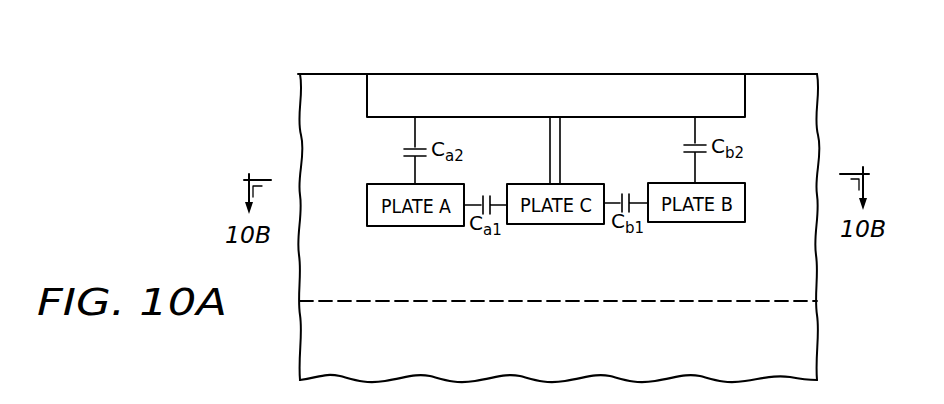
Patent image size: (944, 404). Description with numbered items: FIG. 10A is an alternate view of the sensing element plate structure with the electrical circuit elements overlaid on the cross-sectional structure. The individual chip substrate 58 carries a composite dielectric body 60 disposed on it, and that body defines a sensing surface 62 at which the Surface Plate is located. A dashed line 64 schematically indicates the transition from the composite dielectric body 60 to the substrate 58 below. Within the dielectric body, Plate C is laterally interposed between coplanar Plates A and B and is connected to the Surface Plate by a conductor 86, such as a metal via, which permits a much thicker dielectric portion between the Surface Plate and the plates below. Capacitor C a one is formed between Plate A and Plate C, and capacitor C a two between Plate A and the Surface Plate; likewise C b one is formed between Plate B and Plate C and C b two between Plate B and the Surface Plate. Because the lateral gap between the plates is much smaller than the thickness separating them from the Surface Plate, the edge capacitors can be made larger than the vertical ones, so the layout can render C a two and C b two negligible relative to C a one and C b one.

The semiconductor substrate 58 is at (301, 335).
The composite dielectric body 60 is at (300, 136).
The sensing surface 62 is at (350, 74).
The dashed line 64 is at (546, 303).
The conductor 86 is at (560, 153).